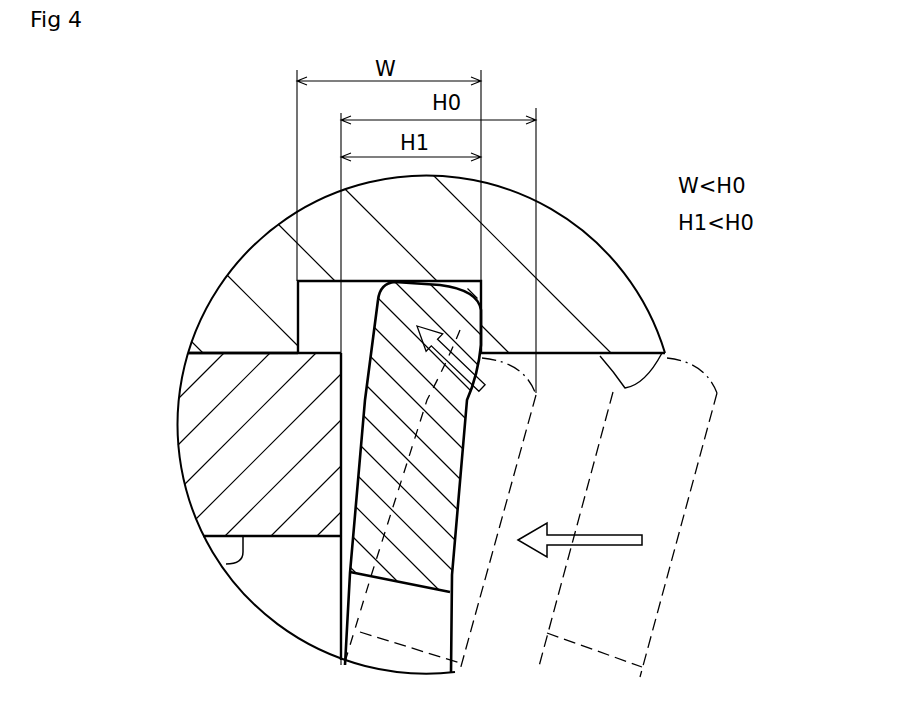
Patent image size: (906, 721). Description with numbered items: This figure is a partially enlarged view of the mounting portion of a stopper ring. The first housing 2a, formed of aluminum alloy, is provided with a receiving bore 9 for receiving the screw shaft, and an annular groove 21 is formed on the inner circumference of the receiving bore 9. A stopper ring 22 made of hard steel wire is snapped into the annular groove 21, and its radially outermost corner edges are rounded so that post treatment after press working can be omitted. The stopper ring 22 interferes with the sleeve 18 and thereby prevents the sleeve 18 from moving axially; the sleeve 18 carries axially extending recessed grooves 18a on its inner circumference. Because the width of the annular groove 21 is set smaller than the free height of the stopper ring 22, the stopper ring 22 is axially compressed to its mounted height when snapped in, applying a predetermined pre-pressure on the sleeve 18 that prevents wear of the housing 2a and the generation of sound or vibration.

The first housing 2a is at (270, 251).
The annular groove 21 is at (322, 283).
The sleeve 18 is at (195, 420).
The recessed groove 18a is at (232, 565).
The stopper ring 22 is at (445, 473).
The receiving bore 9 is at (613, 388).